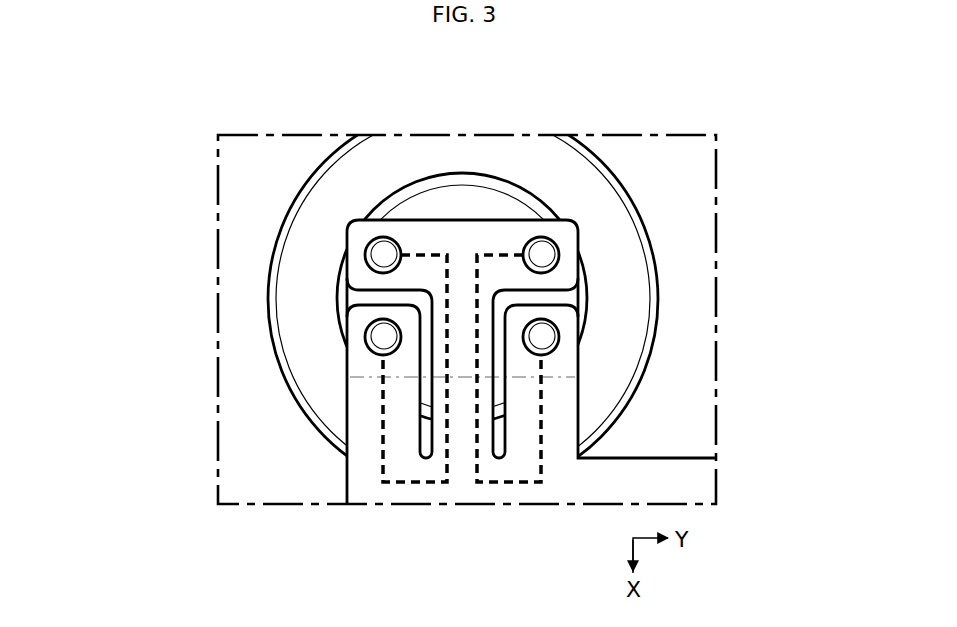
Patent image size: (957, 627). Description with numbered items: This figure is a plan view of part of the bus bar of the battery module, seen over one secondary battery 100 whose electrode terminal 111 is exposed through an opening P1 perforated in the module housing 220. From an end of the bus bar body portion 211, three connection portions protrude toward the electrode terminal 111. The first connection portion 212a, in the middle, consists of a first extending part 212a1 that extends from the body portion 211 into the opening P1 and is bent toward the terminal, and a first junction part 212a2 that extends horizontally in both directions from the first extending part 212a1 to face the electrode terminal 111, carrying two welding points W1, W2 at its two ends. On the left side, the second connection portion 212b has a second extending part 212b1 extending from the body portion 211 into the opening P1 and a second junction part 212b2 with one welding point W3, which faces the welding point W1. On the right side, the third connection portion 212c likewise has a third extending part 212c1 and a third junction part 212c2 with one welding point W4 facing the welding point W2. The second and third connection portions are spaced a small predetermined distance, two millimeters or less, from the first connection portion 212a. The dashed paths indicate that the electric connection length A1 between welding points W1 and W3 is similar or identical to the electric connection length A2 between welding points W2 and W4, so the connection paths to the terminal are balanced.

The secondary battery 100 is at (306, 163).
The electrode terminal 111 is at (423, 205).
The opening P1 is at (620, 177).
The first connection portion 212a is at (465, 255).
The first extending part 212a1 is at (463, 438).
The first junction part 212a2 is at (458, 243).
The second connection portion 212b is at (235, 368).
The second extending part 212b1 is at (354, 434).
The second junction part 212b2 is at (352, 322).
The third connection portion 212c is at (690, 367).
The third extending part 212c1 is at (570, 434).
The third junction part 212c2 is at (572, 322).
The welding point W1 is at (381, 240).
The welding point W2 is at (544, 240).
The welding point W3 is at (372, 350).
The welding point W4 is at (556, 352).
The electric connection length A1 is at (413, 483).
The electric connection length A2 is at (509, 483).
The module housing 220 is at (228, 460).
The body portion 211 is at (708, 483).